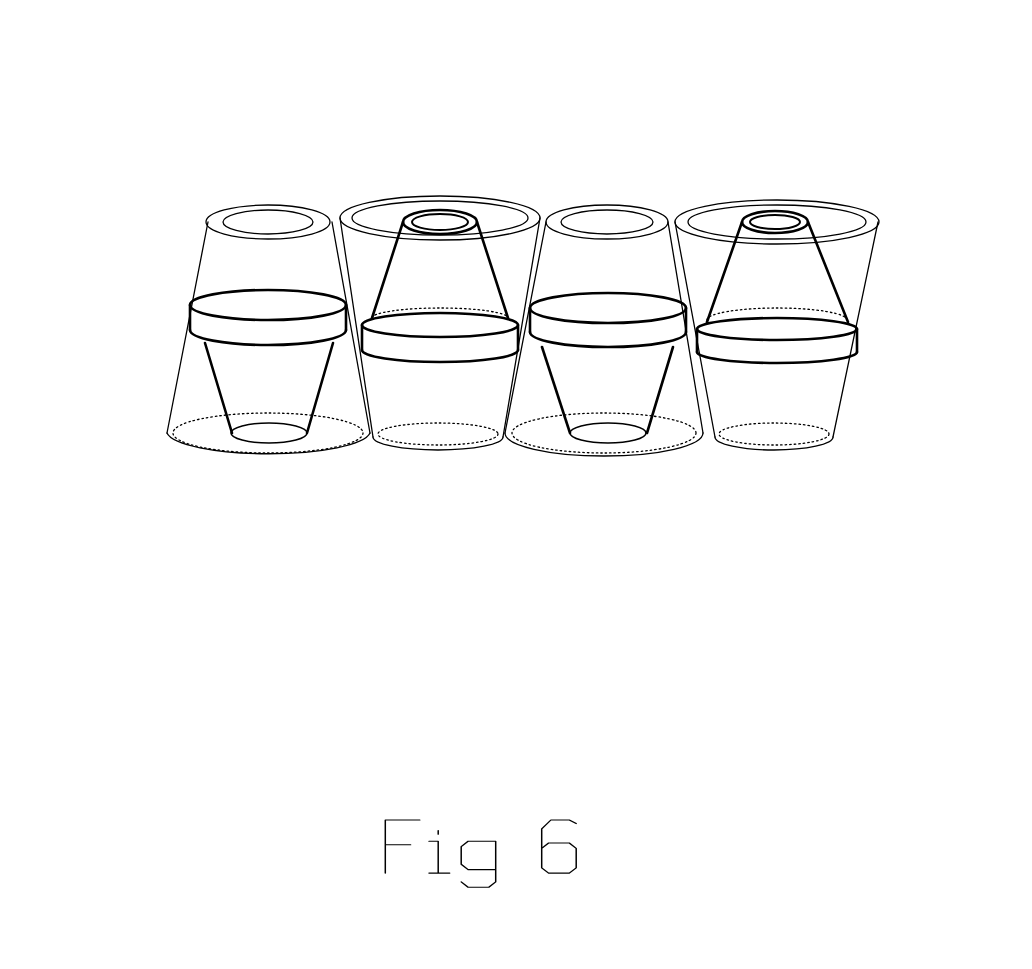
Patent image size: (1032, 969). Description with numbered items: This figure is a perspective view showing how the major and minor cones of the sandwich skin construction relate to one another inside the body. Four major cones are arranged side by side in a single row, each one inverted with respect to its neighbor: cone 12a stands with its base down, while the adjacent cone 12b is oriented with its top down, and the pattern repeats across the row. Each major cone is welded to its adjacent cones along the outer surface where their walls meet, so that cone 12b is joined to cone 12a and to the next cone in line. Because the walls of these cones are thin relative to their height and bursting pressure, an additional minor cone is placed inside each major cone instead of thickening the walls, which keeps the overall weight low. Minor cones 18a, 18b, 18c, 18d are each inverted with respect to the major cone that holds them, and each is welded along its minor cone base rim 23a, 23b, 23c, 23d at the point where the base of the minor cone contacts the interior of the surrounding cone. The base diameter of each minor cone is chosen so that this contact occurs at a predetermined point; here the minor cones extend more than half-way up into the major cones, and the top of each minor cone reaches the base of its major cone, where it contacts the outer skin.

The cone 12a is at (215, 255).
The cone 12b is at (478, 553).
The minor cone 18a is at (198, 613).
The minor cone 18b is at (400, 222).
The minor cone 18c is at (675, 650).
The minor cone 18d is at (740, 215).
The minor cone base rim 23a is at (202, 328).
The minor cone base rim 23b is at (325, 630).
The minor cone base rim 23c is at (577, 548).
The minor cone base rim 23d is at (822, 353).